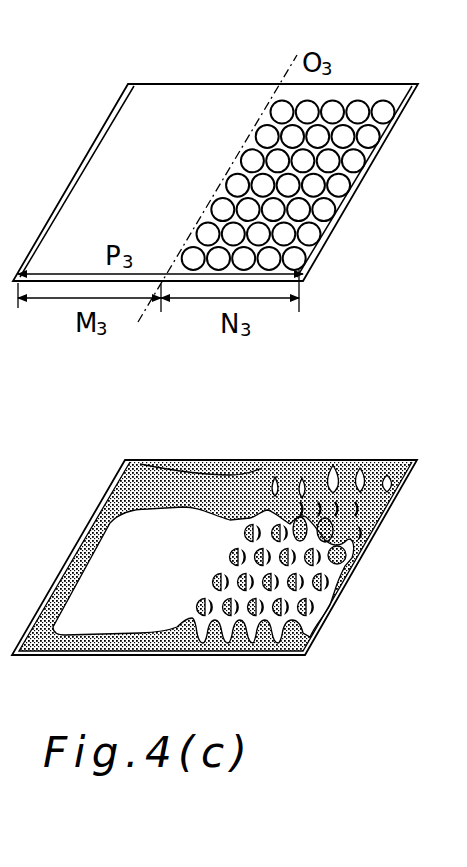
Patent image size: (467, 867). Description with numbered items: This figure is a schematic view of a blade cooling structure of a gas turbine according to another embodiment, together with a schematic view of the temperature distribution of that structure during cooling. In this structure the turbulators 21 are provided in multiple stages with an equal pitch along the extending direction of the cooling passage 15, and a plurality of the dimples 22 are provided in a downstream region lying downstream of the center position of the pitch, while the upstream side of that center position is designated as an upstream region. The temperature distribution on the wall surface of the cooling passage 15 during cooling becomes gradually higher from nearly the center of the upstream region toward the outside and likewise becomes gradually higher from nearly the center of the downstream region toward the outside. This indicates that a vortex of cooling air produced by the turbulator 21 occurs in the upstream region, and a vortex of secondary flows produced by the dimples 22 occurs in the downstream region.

The cooling passage 15 is at (128, 85).
The turbulator 21 is at (103, 127).
The dimple 22 is at (345, 186).